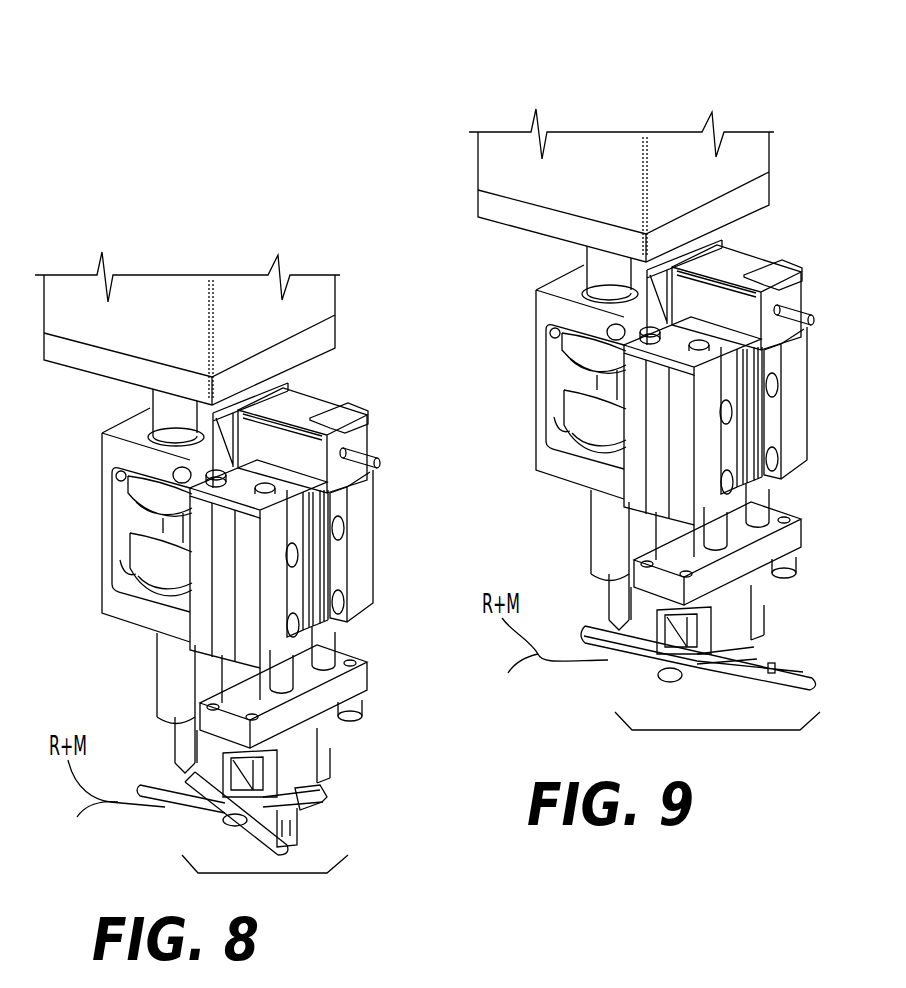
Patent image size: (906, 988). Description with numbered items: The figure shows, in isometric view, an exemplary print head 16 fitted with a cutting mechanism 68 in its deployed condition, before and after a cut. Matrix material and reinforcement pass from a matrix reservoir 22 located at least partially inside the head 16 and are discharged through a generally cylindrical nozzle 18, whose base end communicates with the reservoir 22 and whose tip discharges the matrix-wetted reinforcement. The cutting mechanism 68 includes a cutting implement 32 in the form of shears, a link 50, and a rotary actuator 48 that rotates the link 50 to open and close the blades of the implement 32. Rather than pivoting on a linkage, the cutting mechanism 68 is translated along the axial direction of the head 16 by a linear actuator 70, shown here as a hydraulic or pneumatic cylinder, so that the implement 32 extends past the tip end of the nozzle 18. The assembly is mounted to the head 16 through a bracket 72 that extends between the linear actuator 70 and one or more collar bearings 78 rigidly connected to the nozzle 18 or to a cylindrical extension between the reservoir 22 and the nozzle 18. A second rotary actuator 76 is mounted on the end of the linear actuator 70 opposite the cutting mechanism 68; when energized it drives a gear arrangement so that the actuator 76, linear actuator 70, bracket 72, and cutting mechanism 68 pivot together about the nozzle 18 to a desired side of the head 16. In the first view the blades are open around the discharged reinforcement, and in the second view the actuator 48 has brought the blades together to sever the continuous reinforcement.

In FIG. 8, the head 16 is at (63, 241).
In FIG. 9, the head 16 is at (598, 101).
In FIG. 8, the matrix reservoir 22 is at (260, 332).
In FIG. 9, the matrix reservoir 22 is at (623, 217).
In FIG. 8, the bracket 72 is at (115, 605).
In FIG. 9, the bracket 72 is at (556, 382).
In FIG. 8, the collar bearings 78 is at (133, 553).
In FIG. 9, the collar bearings 78 is at (567, 388).
In FIG. 8, the rotary actuator 76 is at (288, 463).
In FIG. 9, the rotary actuator 76 is at (730, 295).
In FIG. 8, the linear actuator 70 is at (381, 557).
In FIG. 9, the linear actuator 70 is at (752, 421).
In FIG. 8, the rotary actuator 48 is at (308, 743).
In FIG. 9, the rotary actuator 48 is at (721, 574).
In FIG. 8, the nozzle 18 is at (172, 755).
In FIG. 9, the nozzle 18 is at (587, 560).
In FIG. 8, the link 50 is at (318, 808).
In FIG. 9, the link 50 is at (710, 653).
In FIG. 8, the cutting implement 32 is at (198, 816).
In FIG. 9, the cutting implement 32 is at (605, 702).
In FIG. 8, the cutting mechanism 68 is at (273, 875).
In FIG. 9, the cutting mechanism 68 is at (717, 746).